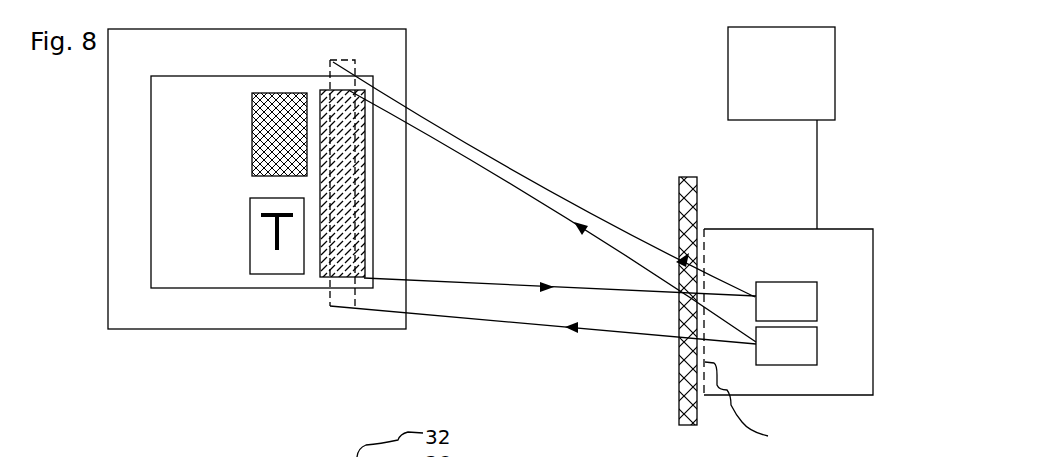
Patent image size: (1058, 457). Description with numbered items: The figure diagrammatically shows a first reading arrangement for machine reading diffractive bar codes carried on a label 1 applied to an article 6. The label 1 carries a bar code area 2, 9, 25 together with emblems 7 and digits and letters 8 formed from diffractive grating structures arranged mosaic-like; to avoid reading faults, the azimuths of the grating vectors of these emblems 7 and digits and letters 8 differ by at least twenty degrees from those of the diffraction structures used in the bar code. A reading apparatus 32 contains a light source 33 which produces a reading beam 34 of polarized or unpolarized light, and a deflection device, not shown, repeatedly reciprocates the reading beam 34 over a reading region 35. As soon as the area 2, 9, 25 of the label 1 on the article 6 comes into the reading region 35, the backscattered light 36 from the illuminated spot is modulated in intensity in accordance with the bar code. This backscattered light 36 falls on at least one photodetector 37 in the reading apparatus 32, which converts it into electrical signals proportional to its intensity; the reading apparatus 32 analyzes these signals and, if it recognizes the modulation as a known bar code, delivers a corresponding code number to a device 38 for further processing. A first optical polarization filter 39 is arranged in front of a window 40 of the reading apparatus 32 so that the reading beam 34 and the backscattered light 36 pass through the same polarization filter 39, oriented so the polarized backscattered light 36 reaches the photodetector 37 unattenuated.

The label 1 is at (262, 182).
The area 2 is at (409, 183).
The article 6 is at (257, 179).
The emblems 7 is at (252, 153).
The digits and letters 8 is at (250, 242).
The area 9 is at (409, 183).
The area 25 is at (366, 120).
The reading apparatus 32 is at (788, 312).
The light source 33 is at (786, 346).
The reading beam 34 is at (565, 218).
The reading region 35 is at (330, 306).
The backscattered light 36 is at (420, 135).
The photodetector 37 is at (786, 301).
The device 38 is at (781, 128).
The first optical polarization filter 39 is at (697, 191).
The window 40 is at (750, 406).